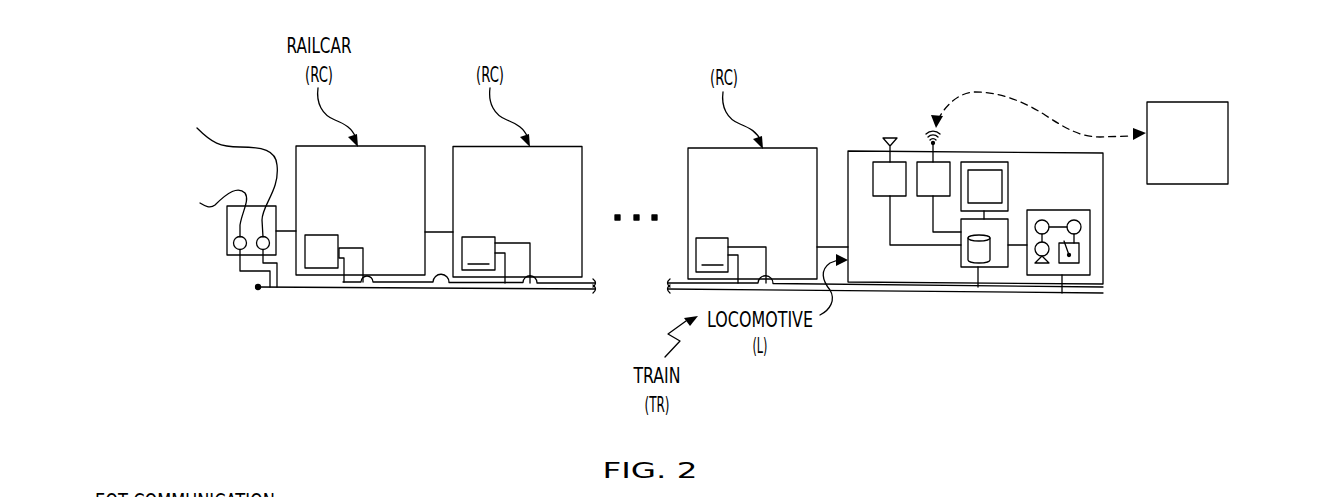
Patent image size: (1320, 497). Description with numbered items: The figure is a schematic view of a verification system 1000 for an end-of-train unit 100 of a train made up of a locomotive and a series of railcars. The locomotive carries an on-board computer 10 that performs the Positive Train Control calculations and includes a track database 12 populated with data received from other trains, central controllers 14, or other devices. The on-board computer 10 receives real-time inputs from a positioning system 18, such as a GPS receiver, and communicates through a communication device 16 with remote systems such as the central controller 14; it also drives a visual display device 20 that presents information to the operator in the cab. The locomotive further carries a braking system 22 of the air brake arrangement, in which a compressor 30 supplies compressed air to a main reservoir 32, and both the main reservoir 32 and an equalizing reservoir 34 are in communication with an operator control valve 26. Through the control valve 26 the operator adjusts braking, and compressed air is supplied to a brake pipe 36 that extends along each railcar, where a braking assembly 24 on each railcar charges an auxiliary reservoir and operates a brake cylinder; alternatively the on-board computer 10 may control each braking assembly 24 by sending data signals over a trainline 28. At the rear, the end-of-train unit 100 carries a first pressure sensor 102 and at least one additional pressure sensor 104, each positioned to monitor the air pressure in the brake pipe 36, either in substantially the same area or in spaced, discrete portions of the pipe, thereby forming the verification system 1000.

The on-board computer 10 is at (993, 268).
The track database 12 is at (968, 253).
The central controller 14 is at (1228, 143).
The communication device 16 is at (917, 162).
The positioning system 18 is at (873, 178).
The visual display device 20 is at (1010, 185).
The braking system 22 is at (1088, 276).
The braking assembly 24 is at (328, 260).
The operator control valve 26 is at (1073, 279).
The trainline 28 is at (453, 288).
The compressor 30 is at (1036, 273).
The main reservoir 32 is at (1074, 220).
The equalizing reservoir 34 is at (1047, 221).
The brake pipe 36 is at (565, 292).
The end-of-train unit 100 is at (226, 237).
The first pressure sensor 102 is at (204, 149).
The additional pressure sensor 104 is at (168, 201).
The verification system 1000 is at (595, 143).